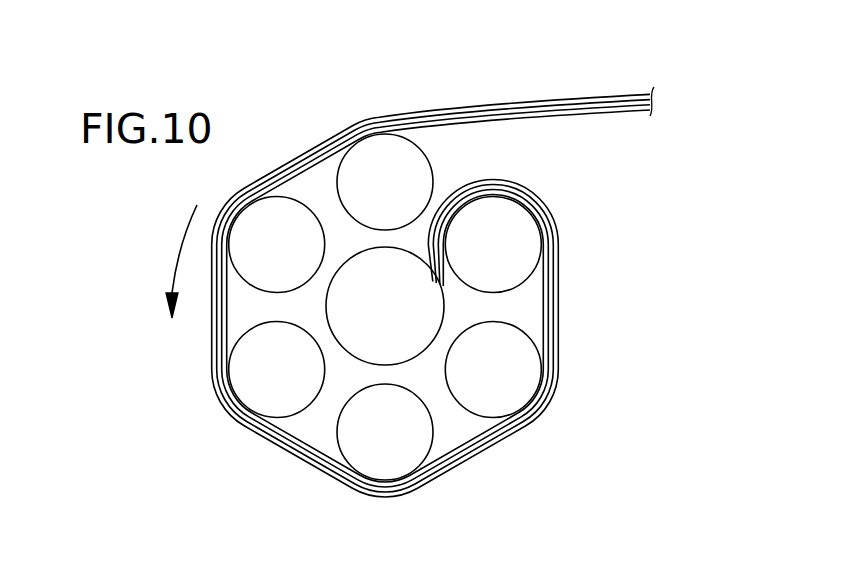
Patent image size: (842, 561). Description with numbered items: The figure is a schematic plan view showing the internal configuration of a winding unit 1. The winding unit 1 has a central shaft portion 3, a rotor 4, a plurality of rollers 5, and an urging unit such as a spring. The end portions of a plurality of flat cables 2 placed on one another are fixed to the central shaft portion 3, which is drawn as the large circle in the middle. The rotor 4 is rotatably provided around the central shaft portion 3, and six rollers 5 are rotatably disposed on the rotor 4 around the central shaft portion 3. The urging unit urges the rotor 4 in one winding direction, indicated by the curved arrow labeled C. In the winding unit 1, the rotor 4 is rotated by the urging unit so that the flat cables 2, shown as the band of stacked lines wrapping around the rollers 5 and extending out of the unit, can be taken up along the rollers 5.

The winding unit 1 is at (282, 466).
The flat cables 2 is at (305, 153).
The central shaft portion 3 is at (421, 351).
The rotor 4 is at (523, 303).
The rollers 5 is at (282, 215).